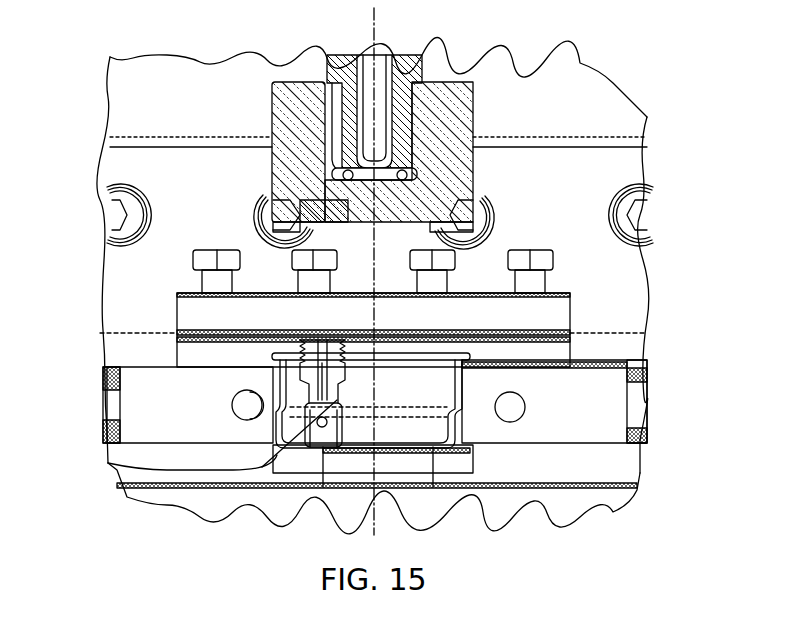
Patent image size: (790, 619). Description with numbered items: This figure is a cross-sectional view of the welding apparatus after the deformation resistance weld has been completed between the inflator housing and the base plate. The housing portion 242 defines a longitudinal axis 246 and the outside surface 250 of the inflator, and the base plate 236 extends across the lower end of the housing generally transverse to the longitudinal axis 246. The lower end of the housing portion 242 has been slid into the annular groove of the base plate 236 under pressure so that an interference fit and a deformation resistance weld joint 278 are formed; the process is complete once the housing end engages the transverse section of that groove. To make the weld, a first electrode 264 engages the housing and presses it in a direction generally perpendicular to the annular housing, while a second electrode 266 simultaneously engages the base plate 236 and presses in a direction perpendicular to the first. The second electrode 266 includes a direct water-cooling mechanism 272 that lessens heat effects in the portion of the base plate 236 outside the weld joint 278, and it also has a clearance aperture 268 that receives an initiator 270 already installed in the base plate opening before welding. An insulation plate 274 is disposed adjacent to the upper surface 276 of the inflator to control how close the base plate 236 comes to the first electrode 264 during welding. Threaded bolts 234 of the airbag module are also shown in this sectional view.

The longitudinal axis 246 is at (374, 17).
The direct water-cooling mechanism 272 is at (330, 168).
The second electrode 266 is at (452, 173).
The clearance aperture 268 is at (265, 197).
The base plate 236 is at (407, 353).
The deformation resistance weld joint 278 is at (470, 360).
The threaded bolts 234 is at (428, 362).
The outside surface 250 is at (255, 357).
The first electrode 264 is at (155, 412).
The housing portion 242 is at (462, 410).
The initiator 270 is at (107, 463).
The insulation plate 274 is at (473, 462).
The upper surface 276 is at (467, 470).